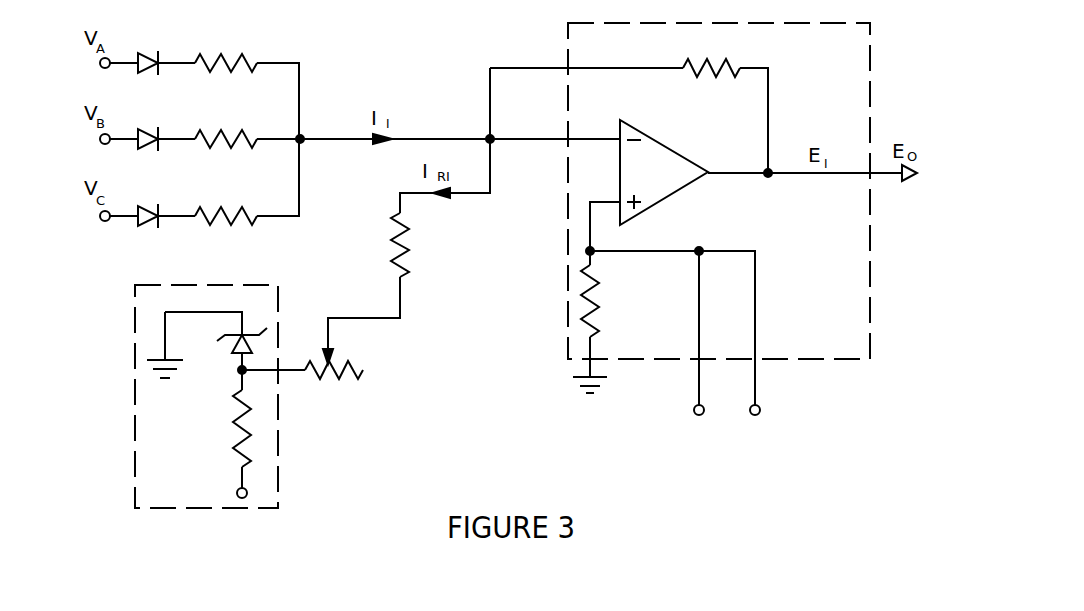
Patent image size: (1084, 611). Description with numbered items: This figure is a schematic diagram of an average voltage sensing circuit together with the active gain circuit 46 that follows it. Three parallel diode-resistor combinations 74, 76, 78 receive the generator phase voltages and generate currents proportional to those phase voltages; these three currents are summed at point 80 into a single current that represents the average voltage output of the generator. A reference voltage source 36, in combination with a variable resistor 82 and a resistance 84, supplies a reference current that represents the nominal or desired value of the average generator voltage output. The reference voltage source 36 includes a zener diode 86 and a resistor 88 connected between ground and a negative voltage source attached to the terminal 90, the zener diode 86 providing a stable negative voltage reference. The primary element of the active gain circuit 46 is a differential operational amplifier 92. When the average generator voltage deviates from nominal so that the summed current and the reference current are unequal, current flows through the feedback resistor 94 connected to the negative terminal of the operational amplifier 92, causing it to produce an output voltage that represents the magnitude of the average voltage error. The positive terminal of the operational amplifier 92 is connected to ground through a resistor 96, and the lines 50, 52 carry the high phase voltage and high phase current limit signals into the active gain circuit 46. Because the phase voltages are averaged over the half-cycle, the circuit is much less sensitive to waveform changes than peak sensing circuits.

The reference voltage source 36 is at (262, 287).
The active gain circuit 46 is at (870, 26).
The line 50 is at (697, 382).
The line 52 is at (757, 381).
The diode-resistor combination 74 is at (150, 56).
The diode-resistor combination 76 is at (160, 131).
The diode-resistor combination 78 is at (160, 209).
The point 80 is at (300, 138).
The variable resistor 82 is at (349, 368).
The resistance 84 is at (400, 242).
The zener diode 86 is at (236, 346).
The resistor 88 is at (237, 423).
The terminal 90 is at (238, 491).
The differential operational amplifier 92 is at (674, 150).
The feedback resistor 94 is at (716, 63).
The resistor 96 is at (592, 303).